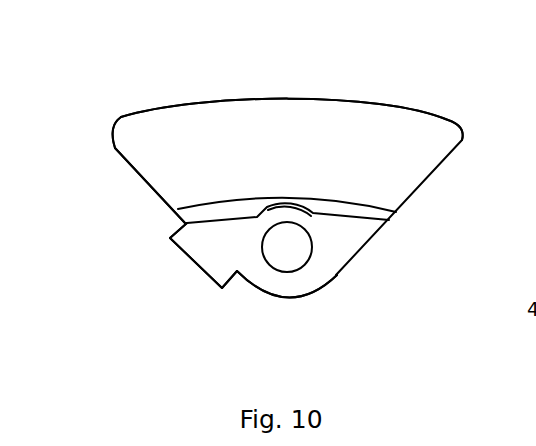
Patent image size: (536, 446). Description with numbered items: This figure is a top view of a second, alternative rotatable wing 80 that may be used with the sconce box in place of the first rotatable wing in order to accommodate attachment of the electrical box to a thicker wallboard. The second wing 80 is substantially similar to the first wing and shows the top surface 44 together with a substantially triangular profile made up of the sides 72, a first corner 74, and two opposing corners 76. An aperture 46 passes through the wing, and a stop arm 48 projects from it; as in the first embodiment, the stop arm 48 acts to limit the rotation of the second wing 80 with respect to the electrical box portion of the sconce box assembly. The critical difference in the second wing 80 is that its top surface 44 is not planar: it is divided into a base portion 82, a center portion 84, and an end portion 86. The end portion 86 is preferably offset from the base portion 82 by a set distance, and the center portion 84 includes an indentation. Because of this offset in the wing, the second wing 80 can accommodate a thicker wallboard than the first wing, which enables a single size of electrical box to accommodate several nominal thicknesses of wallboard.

The second wing 80 is at (89, 90).
The top surface 44 is at (276, 162).
The end portion 86 is at (368, 115).
The sides 72 is at (143, 178).
The opposing corners 76 is at (113, 133).
The center portion 84 is at (380, 215).
The base portion 82 is at (347, 243).
The stop arm 48 is at (195, 263).
The first corner 74 is at (287, 298).
The aperture 46 is at (290, 250).